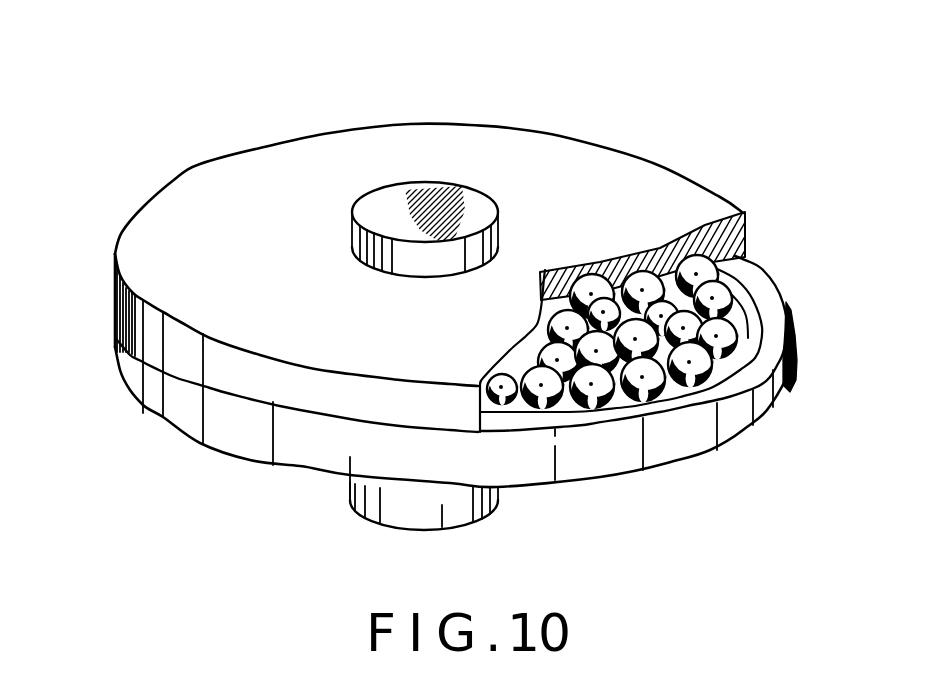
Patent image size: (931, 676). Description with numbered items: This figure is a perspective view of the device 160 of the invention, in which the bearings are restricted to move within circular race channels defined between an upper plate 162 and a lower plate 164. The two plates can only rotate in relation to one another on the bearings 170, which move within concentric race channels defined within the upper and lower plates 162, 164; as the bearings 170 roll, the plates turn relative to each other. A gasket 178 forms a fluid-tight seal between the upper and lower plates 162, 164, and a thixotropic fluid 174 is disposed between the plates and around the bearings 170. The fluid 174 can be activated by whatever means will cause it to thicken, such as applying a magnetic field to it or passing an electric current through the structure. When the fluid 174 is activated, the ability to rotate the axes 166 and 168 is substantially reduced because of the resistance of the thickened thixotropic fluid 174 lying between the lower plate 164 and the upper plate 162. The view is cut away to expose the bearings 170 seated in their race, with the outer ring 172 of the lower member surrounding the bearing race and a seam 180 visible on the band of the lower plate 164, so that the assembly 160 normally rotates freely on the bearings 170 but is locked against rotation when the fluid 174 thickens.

The bearing assembly 160 is at (600, 106).
The upper plate 162 is at (257, 154).
The lower plate 164 is at (185, 417).
The axis 166 is at (361, 207).
The axis 168 is at (430, 520).
The bearings 170 is at (738, 250).
The outer ring 172 is at (781, 311).
The thixotropic fluid 174 is at (786, 368).
The gasket 178 is at (742, 228).
The seam 180 is at (688, 393).